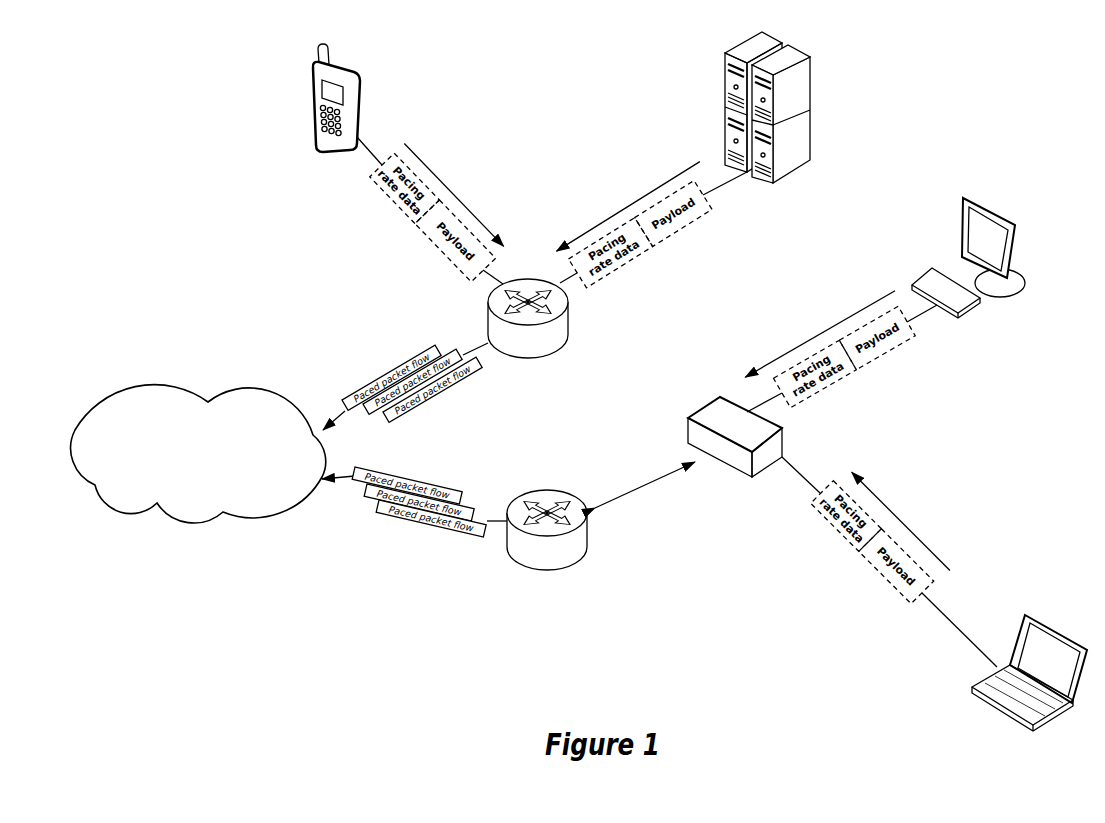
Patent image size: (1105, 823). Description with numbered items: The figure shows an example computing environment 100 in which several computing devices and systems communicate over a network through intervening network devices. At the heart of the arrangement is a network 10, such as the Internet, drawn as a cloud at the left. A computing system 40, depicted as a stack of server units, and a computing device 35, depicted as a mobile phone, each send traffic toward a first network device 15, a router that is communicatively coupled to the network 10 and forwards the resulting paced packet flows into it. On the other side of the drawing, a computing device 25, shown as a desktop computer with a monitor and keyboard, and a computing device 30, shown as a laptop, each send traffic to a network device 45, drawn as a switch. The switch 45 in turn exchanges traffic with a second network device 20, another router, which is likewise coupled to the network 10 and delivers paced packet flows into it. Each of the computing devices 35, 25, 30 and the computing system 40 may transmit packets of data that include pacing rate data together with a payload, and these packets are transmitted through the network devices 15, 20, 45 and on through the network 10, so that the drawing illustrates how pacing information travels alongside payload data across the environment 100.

The computing environment 100 is at (188, 76).
The network 10 is at (223, 512).
The network device 15 is at (488, 320).
The network device 20 is at (590, 548).
The computing device 25 is at (957, 228).
The computing device 30 is at (985, 712).
The computing device 35 is at (360, 99).
The computing system 40 is at (813, 80).
The network device 45 is at (752, 462).